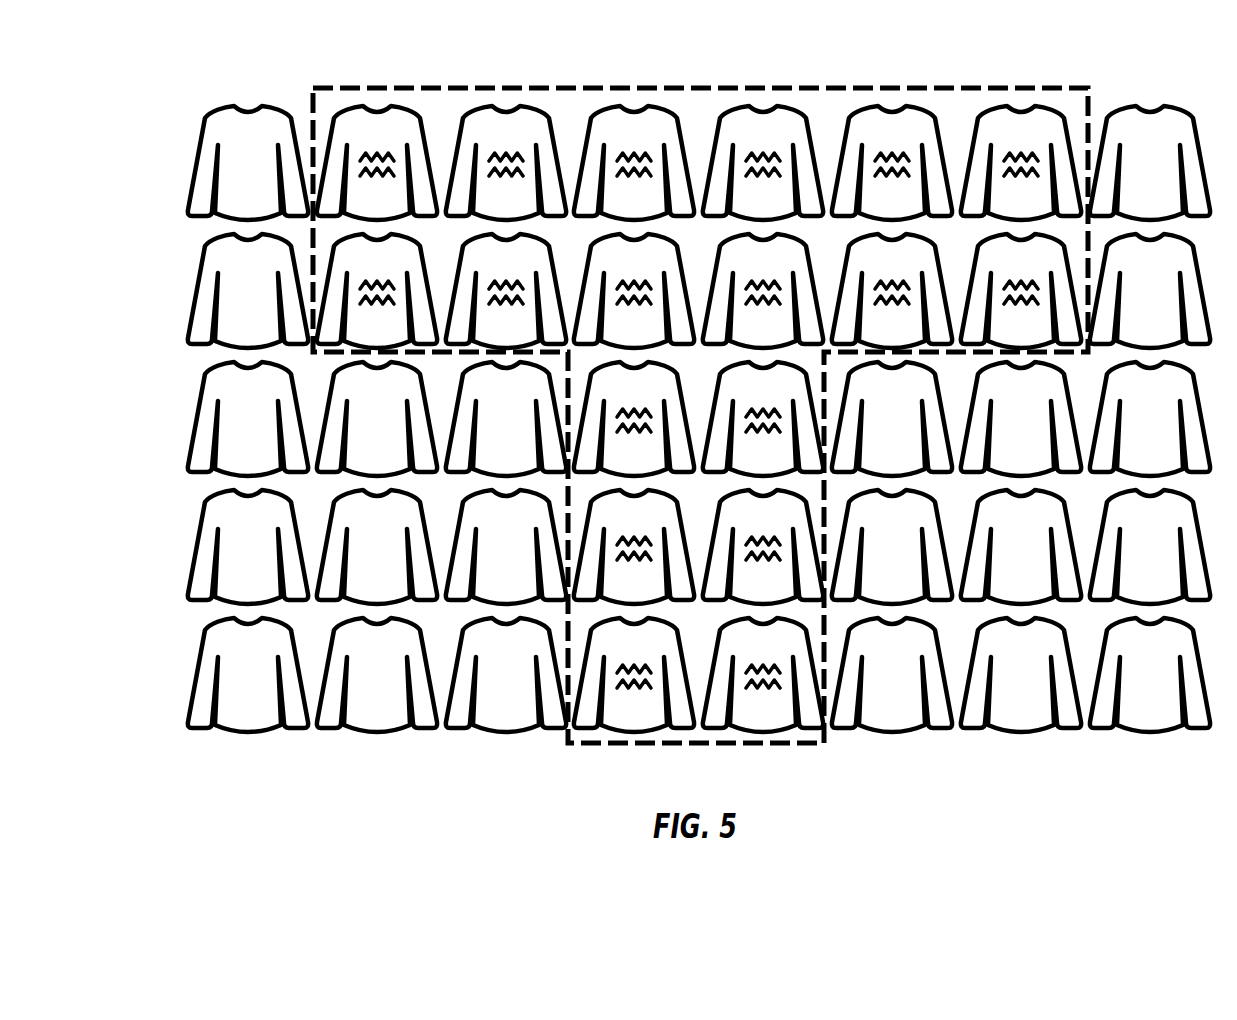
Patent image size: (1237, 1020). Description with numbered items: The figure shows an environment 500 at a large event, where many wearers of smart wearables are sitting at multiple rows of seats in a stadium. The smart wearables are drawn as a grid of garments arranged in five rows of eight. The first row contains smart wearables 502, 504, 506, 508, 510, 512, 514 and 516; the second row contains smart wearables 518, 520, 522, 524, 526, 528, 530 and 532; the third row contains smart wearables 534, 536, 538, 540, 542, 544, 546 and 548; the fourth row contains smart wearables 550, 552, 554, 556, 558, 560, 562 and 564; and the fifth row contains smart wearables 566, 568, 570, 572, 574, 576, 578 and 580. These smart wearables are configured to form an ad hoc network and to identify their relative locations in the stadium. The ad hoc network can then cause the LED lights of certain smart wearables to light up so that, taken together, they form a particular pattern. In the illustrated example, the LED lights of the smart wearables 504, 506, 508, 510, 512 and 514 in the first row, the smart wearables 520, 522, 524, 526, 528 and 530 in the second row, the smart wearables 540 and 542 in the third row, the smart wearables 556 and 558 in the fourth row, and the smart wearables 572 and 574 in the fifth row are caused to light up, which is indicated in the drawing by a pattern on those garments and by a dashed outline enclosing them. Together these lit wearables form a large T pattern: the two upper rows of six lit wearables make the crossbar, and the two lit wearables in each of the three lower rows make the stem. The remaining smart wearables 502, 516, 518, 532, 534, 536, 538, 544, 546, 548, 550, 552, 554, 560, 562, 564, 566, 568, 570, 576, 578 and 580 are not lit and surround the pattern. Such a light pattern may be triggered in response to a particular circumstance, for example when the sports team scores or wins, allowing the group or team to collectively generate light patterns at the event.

The environment 500 is at (672, 52).
The smart wearable 502 is at (248, 163).
The smart wearable 504 is at (377, 163).
The smart wearable 506 is at (506, 163).
The smart wearable 508 is at (634, 163).
The smart wearable 510 is at (763, 163).
The smart wearable 512 is at (892, 163).
The smart wearable 514 is at (1021, 163).
The smart wearable 516 is at (1150, 163).
The smart wearable 518 is at (248, 291).
The smart wearable 520 is at (377, 291).
The smart wearable 522 is at (506, 291).
The smart wearable 524 is at (634, 291).
The smart wearable 526 is at (763, 291).
The smart wearable 528 is at (892, 291).
The smart wearable 530 is at (1021, 291).
The smart wearable 532 is at (1150, 291).
The smart wearable 534 is at (248, 419).
The smart wearable 536 is at (377, 419).
The smart wearable 538 is at (506, 419).
The smart wearable 540 is at (634, 419).
The smart wearable 542 is at (763, 419).
The smart wearable 544 is at (892, 419).
The smart wearable 546 is at (1021, 419).
The smart wearable 548 is at (1150, 419).
The smart wearable 550 is at (248, 547).
The smart wearable 552 is at (377, 547).
The smart wearable 554 is at (506, 547).
The smart wearable 556 is at (634, 547).
The smart wearable 558 is at (763, 547).
The smart wearable 560 is at (892, 547).
The smart wearable 562 is at (1021, 547).
The smart wearable 564 is at (1150, 547).
The smart wearable 566 is at (248, 675).
The smart wearable 568 is at (377, 675).
The smart wearable 570 is at (506, 675).
The smart wearable 572 is at (634, 675).
The smart wearable 574 is at (763, 675).
The smart wearable 576 is at (892, 675).
The smart wearable 578 is at (1021, 675).
The smart wearable 580 is at (1150, 675).